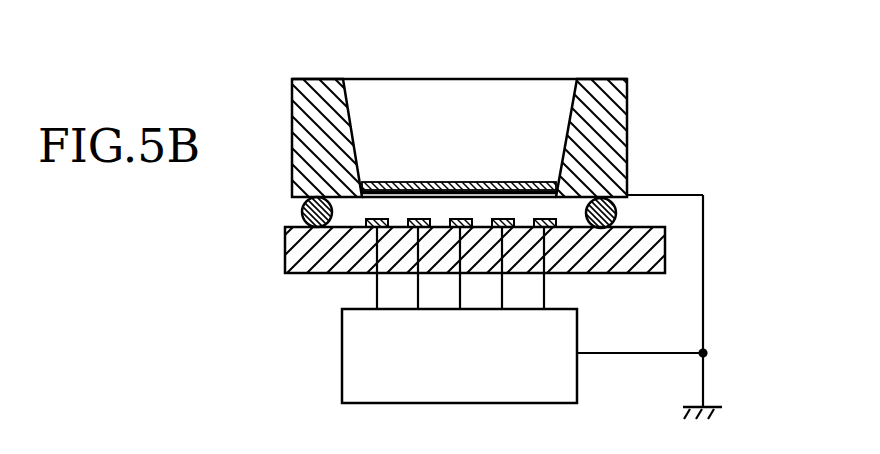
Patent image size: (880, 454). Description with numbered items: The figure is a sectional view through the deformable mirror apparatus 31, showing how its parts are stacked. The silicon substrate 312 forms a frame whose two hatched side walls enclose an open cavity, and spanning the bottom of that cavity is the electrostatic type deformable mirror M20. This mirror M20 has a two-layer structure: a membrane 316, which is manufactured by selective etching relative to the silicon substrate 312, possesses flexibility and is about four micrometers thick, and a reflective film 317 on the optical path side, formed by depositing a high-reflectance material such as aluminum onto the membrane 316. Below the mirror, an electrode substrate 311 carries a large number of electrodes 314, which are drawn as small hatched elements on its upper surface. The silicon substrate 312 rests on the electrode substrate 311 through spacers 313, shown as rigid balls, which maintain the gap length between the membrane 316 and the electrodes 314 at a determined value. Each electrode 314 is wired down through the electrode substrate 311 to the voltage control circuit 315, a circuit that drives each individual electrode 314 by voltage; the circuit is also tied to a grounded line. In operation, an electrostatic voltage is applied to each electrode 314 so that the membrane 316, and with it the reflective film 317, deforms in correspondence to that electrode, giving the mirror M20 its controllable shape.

The deformable mirror apparatus 31 is at (559, 77).
The silicon substrate 312 is at (600, 108).
The spacers 313 is at (301, 213).
The electrodes 314 is at (384, 181).
The voltage control circuit 315 is at (342, 361).
The membrane 316 is at (455, 182).
The reflective film 317 is at (526, 182).
The electrode substrate 311 is at (644, 262).
The electrostatic type deformable mirror M20 is at (488, 176).